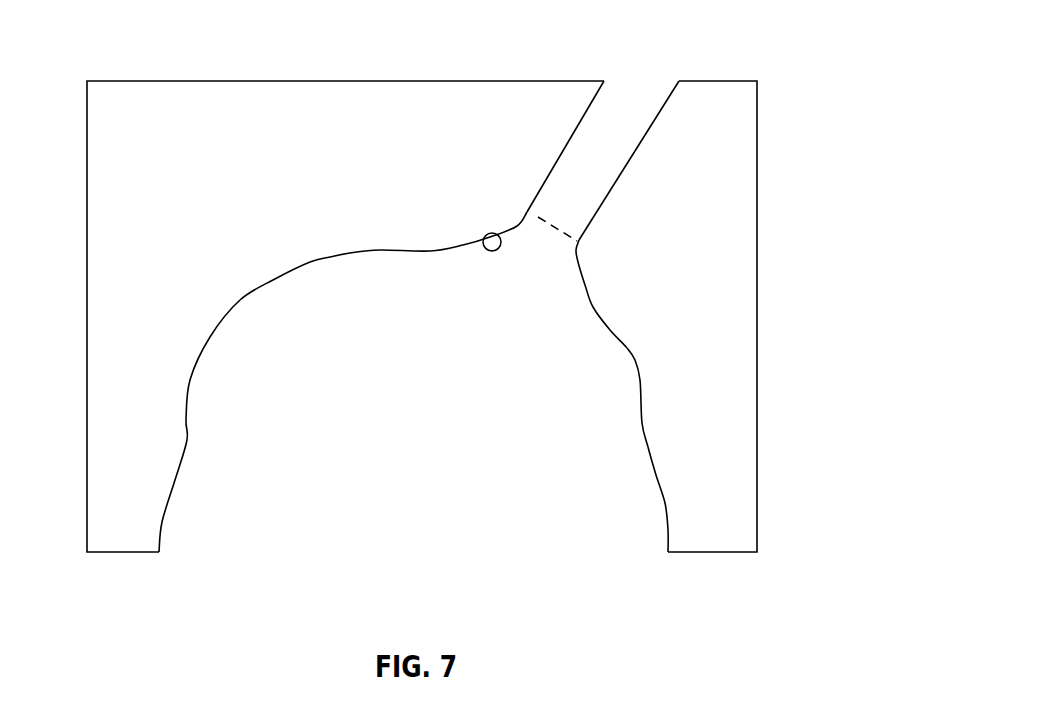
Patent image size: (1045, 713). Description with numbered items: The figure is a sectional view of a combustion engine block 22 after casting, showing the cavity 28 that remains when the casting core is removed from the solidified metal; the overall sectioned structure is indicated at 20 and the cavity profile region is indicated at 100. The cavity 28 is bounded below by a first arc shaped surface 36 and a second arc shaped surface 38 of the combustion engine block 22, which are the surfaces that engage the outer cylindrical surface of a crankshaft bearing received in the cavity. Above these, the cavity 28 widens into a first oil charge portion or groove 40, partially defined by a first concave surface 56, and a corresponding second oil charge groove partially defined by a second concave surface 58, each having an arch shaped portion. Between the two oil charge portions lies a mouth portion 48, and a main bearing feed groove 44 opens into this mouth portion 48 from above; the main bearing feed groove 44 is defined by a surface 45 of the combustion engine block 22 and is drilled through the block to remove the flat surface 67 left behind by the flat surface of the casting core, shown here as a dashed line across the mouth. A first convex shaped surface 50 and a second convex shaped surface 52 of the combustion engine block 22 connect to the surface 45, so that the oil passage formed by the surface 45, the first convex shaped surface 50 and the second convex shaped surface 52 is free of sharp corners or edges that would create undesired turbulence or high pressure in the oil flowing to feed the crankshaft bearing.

The mold assembly 20 is at (763, 52).
The combustion engine block 22 is at (757, 190).
The first cavity 28 is at (492, 525).
The first arc shaped surface 36 is at (163, 522).
The second arc shaped surface 38 is at (662, 505).
The first oil charge portion or groove 40 is at (210, 345).
The main bearing feed groove 44 is at (642, 78).
The surface 45 is at (590, 107).
The mouth portion 48 is at (538, 228).
The first convex shaped surface 50 is at (500, 233).
The second convex shaped surface 52 is at (595, 307).
The first concave surface 56 is at (273, 280).
The second concave surface 58 is at (632, 353).
The flat surface 67 is at (555, 228).
The cavity profile 100 is at (337, 538).